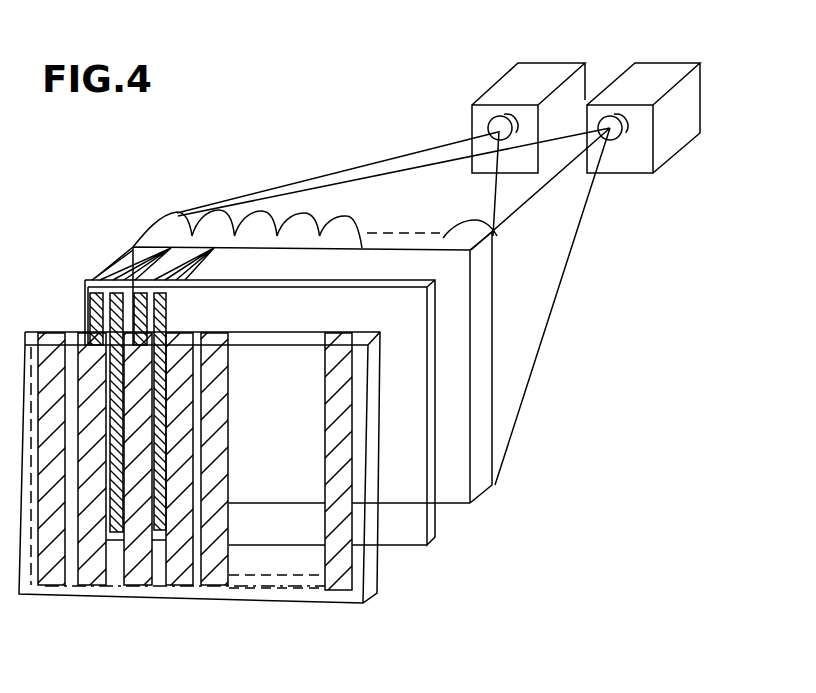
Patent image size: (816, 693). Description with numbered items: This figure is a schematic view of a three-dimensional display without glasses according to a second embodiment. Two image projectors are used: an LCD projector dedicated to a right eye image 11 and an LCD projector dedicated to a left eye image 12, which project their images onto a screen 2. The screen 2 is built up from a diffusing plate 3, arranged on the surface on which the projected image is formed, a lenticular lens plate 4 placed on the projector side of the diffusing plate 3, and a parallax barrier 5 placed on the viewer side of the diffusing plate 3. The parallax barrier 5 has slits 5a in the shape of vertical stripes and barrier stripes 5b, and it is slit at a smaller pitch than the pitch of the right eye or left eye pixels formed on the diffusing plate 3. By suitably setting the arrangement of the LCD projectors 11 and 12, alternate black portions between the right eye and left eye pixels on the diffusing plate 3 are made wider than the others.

The screen 2 is at (502, 492).
The diffusing plate 3 is at (90, 280).
The lenticular lens plate 4 is at (168, 230).
The parallax barrier 5 is at (30, 332).
The slits 5a is at (70, 578).
The barrier stripes 5b is at (50, 586).
The LCD projector dedicated to a right eye image 11 is at (673, 137).
The LCD projector dedicated to a left eye image 12 is at (502, 87).